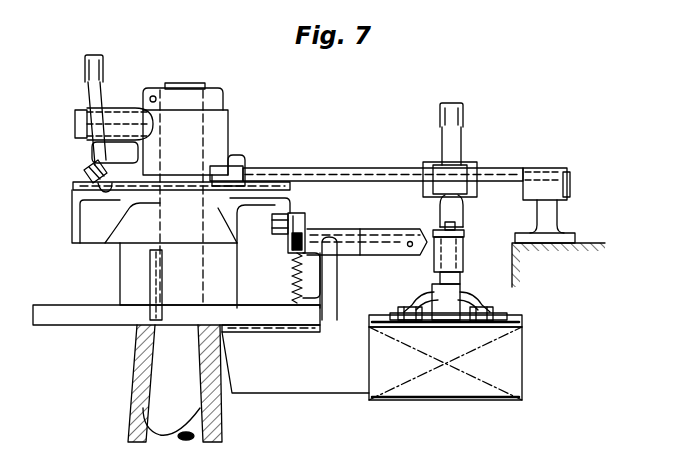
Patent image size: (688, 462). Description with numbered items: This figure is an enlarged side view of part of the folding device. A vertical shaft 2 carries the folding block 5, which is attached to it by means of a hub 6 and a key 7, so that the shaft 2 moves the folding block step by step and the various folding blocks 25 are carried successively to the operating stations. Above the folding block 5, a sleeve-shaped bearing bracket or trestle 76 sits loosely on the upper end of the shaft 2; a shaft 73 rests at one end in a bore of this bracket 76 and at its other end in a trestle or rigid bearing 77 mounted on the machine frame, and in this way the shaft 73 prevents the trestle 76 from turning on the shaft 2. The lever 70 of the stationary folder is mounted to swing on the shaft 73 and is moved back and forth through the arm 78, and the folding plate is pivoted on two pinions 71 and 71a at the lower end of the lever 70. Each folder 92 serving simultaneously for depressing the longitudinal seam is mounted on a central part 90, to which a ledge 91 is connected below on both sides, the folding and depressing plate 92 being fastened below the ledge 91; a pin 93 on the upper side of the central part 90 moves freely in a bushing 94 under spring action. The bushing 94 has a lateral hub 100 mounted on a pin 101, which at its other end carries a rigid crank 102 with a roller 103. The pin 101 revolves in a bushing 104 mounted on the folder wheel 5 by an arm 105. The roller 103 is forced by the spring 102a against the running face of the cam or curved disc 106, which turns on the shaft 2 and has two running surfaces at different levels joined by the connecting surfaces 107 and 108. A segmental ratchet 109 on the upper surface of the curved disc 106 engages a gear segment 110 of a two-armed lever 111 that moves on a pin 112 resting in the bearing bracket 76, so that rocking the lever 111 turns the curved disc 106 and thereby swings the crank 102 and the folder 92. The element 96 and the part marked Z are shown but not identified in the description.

The vertical shaft 2 is at (142, 370).
The folding block 5 is at (73, 310).
The hub 6 is at (228, 286).
The key 7 is at (161, 279).
The folding blocks 25 is at (320, 388).
The lever 70 is at (460, 219).
The pinion 71 is at (498, 311).
The pinion 71a is at (405, 307).
The shaft 73 is at (344, 175).
The bearing bracket 76 is at (222, 124).
The trestle 77 is at (544, 170).
The arm 78 is at (457, 143).
The central part 90 is at (452, 320).
The ledge 91 is at (480, 293).
The folder 92 is at (527, 326).
The pin 93 is at (461, 279).
The bushing 94 is at (464, 262).
The collar 96 is at (465, 233).
The lateral hub 100 is at (419, 231).
The pin 101 is at (374, 228).
The rigid crank 102 is at (296, 213).
The spring 102a is at (294, 286).
The roller 103 is at (291, 242).
The bushing 104 is at (350, 255).
The arm 105 is at (335, 307).
The curved disc 106 is at (254, 199).
The connecting surface 107 is at (246, 223).
The connecting surface 108 is at (127, 223).
The segmental ratchet 109 is at (94, 184).
The gear segment 110 is at (85, 172).
The two-armed lever 111 is at (100, 95).
The pin 112 is at (76, 124).
The counterweight box Z is at (518, 363).